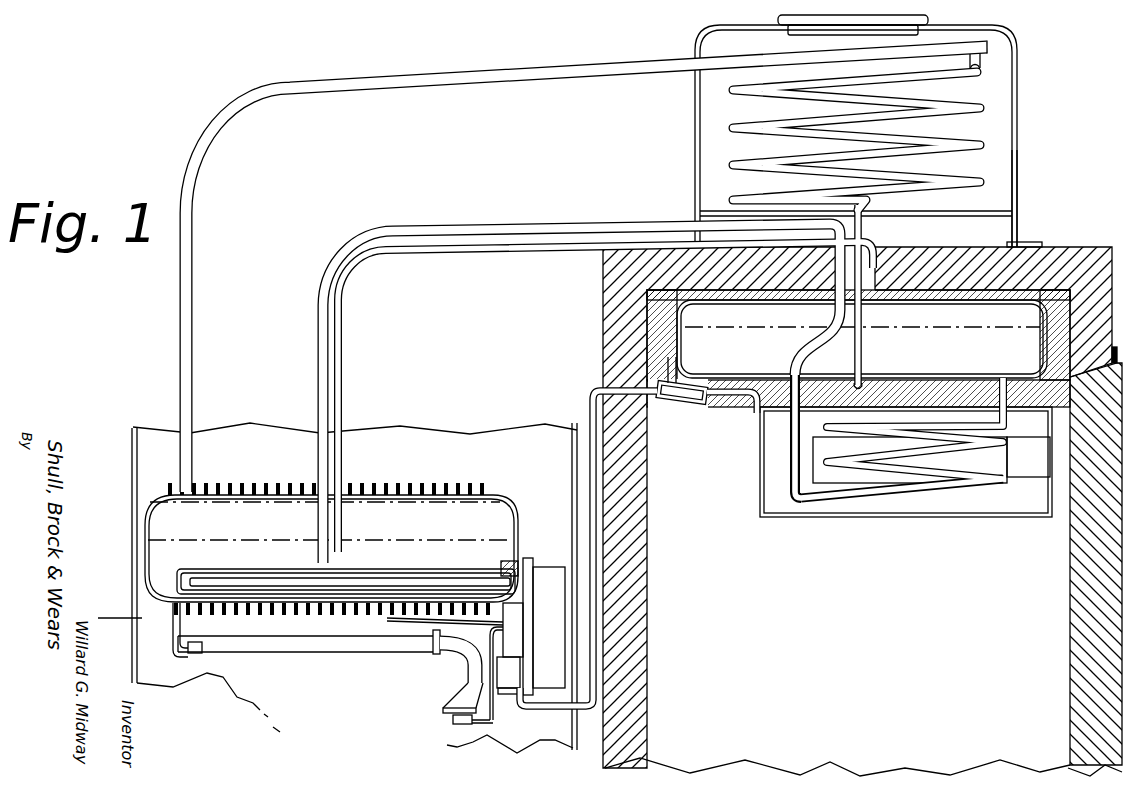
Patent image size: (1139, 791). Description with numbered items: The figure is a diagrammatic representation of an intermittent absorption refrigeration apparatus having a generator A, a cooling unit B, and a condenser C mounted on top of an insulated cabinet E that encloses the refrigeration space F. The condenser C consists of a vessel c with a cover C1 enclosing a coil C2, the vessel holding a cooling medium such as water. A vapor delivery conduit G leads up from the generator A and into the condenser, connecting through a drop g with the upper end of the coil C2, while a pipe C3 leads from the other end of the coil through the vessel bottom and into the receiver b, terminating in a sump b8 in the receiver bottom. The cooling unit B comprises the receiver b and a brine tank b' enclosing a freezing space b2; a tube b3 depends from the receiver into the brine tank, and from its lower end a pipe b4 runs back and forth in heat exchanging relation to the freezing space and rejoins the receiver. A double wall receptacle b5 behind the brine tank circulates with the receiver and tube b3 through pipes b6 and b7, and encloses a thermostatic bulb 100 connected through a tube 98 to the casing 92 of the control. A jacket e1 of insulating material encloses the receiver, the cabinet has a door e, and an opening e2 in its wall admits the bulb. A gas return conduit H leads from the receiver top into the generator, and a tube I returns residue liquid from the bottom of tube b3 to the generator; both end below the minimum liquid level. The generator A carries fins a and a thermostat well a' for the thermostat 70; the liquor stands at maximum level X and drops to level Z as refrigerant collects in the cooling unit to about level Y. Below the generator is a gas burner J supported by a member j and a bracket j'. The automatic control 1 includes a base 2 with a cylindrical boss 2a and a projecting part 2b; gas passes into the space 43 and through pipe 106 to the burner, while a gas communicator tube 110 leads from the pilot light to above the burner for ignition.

The insulated cabinet E is at (603, 302).
The door e is at (1095, 577).
The jacket e1 is at (647, 327).
The opening e2 is at (650, 380).
The condenser C is at (1000, 118).
The vessel c is at (1017, 183).
The cover C1 is at (930, 22).
The coil C2 is at (958, 107).
The pipe C3 is at (879, 252).
The vapor delivery conduit G is at (194, 220).
The drop g is at (988, 62).
The gas return conduit H is at (574, 231).
The tube I is at (521, 255).
The receiver b is at (862, 339).
The dotted line Y is at (768, 328).
The cooling unit B is at (757, 460).
The brine tank b' is at (915, 460).
The freezing space b2 is at (1027, 470).
The tube b3 is at (790, 474).
The pipe b4 is at (862, 500).
The double wall receptacle b5 is at (688, 418).
The pipe b6 is at (679, 372).
The pipe b7 is at (735, 413).
The sump b8 is at (862, 382).
The bulb 100 is at (681, 403).
The tube 98 is at (598, 571).
The refrigeration space F is at (863, 671).
The generator A is at (386, 492).
The fins a is at (330, 530).
The line X is at (276, 506).
The dotted line Z is at (372, 541).
The thermostat well a' is at (346, 570).
The thermostat 70 is at (258, 578).
The cylindrical boss 2a is at (505, 569).
The automatic control 1 is at (534, 580).
The base 2 is at (534, 609).
The space 43 is at (523, 628).
The rearwardly projecting part 2b is at (521, 670).
The casing 92 is at (508, 694).
The gas communicator tube 110 is at (386, 621).
The gas burner J is at (333, 656).
The bracket j' is at (167, 630).
The member j is at (446, 671).
The pipe 106 is at (470, 726).